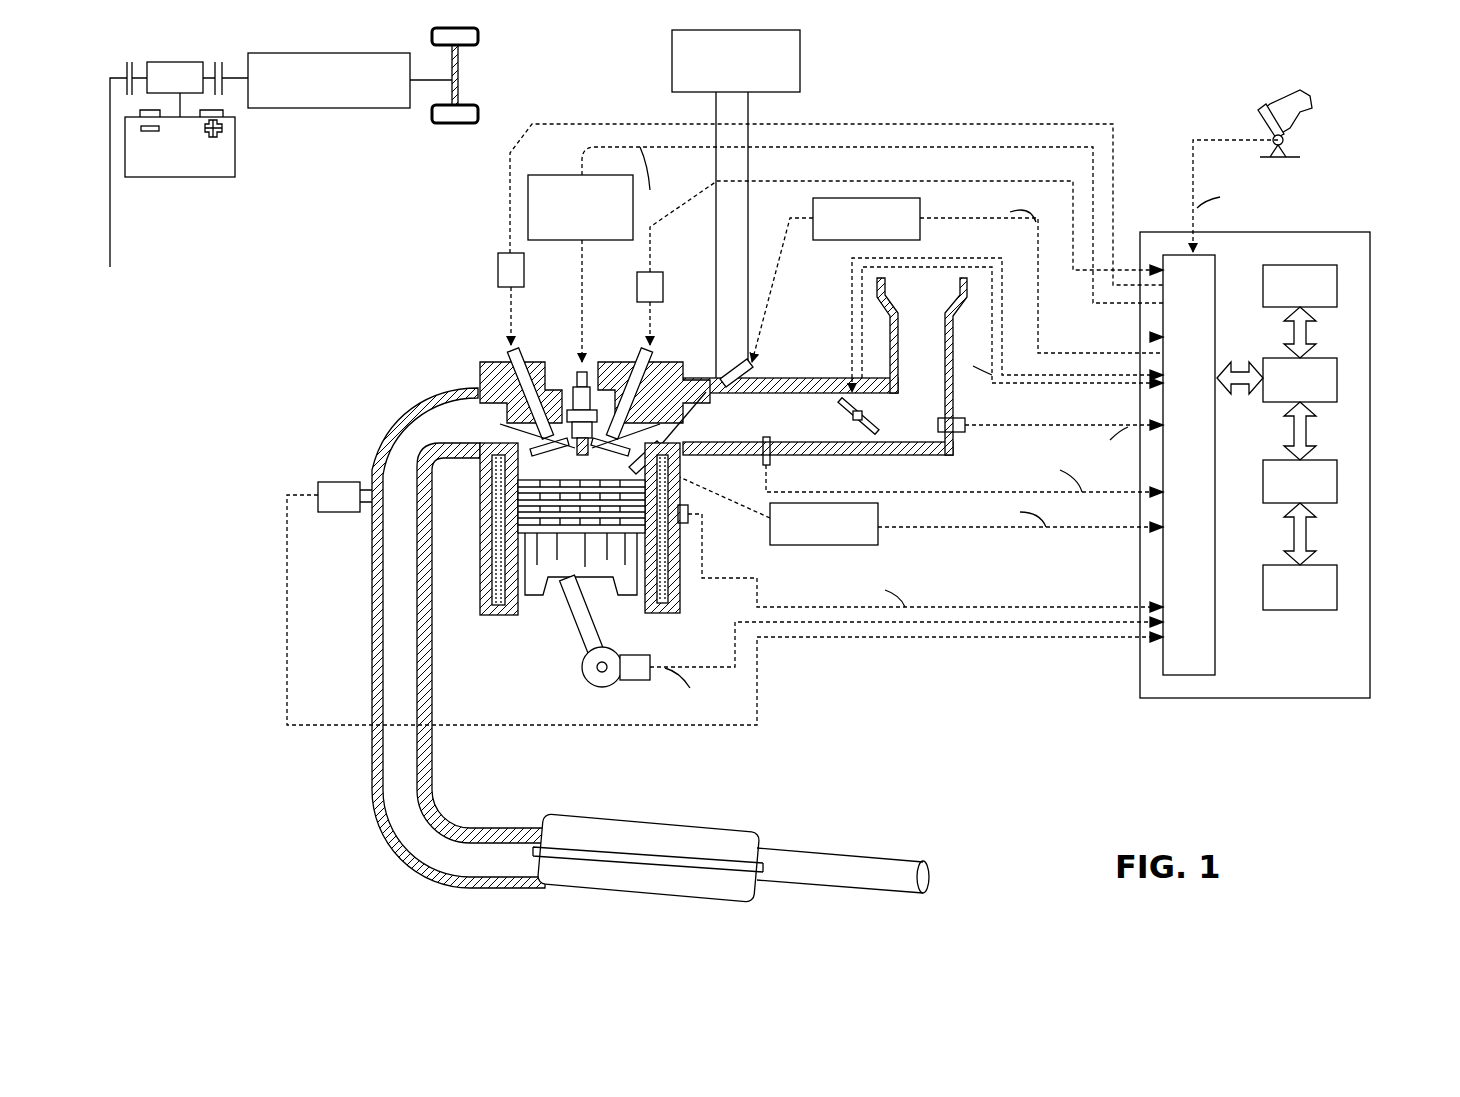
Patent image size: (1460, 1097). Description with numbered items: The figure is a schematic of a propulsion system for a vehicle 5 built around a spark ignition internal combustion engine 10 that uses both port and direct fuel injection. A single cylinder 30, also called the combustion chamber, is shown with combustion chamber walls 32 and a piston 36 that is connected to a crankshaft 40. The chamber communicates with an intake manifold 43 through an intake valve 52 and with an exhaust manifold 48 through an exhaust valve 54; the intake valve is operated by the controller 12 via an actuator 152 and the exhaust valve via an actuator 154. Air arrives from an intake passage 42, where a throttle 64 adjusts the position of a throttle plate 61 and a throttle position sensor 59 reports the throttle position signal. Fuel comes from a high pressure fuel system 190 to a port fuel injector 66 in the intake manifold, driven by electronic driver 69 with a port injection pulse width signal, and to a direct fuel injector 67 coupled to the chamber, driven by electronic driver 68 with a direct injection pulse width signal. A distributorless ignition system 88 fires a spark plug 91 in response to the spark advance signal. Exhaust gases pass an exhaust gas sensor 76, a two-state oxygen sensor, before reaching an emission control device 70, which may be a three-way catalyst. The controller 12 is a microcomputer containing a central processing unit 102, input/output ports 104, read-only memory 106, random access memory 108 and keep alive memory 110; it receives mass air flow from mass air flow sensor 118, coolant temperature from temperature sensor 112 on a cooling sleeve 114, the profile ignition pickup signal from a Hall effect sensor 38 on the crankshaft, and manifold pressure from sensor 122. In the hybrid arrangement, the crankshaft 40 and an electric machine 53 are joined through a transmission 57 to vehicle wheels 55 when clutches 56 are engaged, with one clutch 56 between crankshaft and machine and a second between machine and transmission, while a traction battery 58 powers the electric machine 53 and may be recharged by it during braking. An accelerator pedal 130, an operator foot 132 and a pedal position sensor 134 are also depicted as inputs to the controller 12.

The vehicle 5 is at (1038, 82).
The engine 10 is at (412, 314).
The controller 12 is at (1370, 234).
The cylinder 30 is at (490, 572).
The combustion chamber walls 32 is at (520, 617).
The piston 36 is at (565, 585).
The Hall effect sensor 38 is at (632, 682).
The crankshaft 40 is at (592, 687).
The intake passage 42 is at (922, 366).
The intake manifold 43 is at (818, 416).
The exhaust manifold 48 is at (458, 638).
The intake valve 52 is at (598, 400).
The electric machine 53 is at (178, 62).
The exhaust valve 54 is at (516, 410).
The vehicle wheels 55 is at (462, 125).
The clutch 56 is at (127, 68).
The transmission 57 is at (352, 108).
The traction battery 58 is at (183, 177).
The throttle position sensor 59 is at (878, 428).
The throttle plate 61 is at (860, 432).
The throttle 64 is at (845, 432).
The port fuel injector 66 is at (740, 360).
The direct fuel injector 67 is at (672, 468).
The electronic driver 68 is at (913, 507).
The electronic driver 69 is at (957, 280).
The emission control device 70 is at (702, 822).
The exhaust gas sensor 76 is at (318, 490).
The distributorless ignition system 88 is at (545, 175).
The spark plug 91 is at (589, 380).
The central processing unit 102 is at (1337, 382).
The input/output ports 104 is at (1217, 262).
The read-only memory 106 is at (1337, 287).
The random access memory 108 is at (1337, 487).
The keep alive memory 110 is at (1337, 592).
The temperature sensor 112 is at (690, 525).
The cooling sleeve 114 is at (680, 588).
The mass air flow sensor 118 is at (965, 420).
The manifold pressure sensor 122 is at (763, 458).
The accelerator pedal 130 is at (1312, 100).
The vehicle operator foot 132 is at (1260, 108).
The pedal position sensor 134 is at (1290, 142).
The actuator 152 is at (637, 285).
The actuator 154 is at (498, 270).
The high pressure fuel system 190 is at (736, 204).